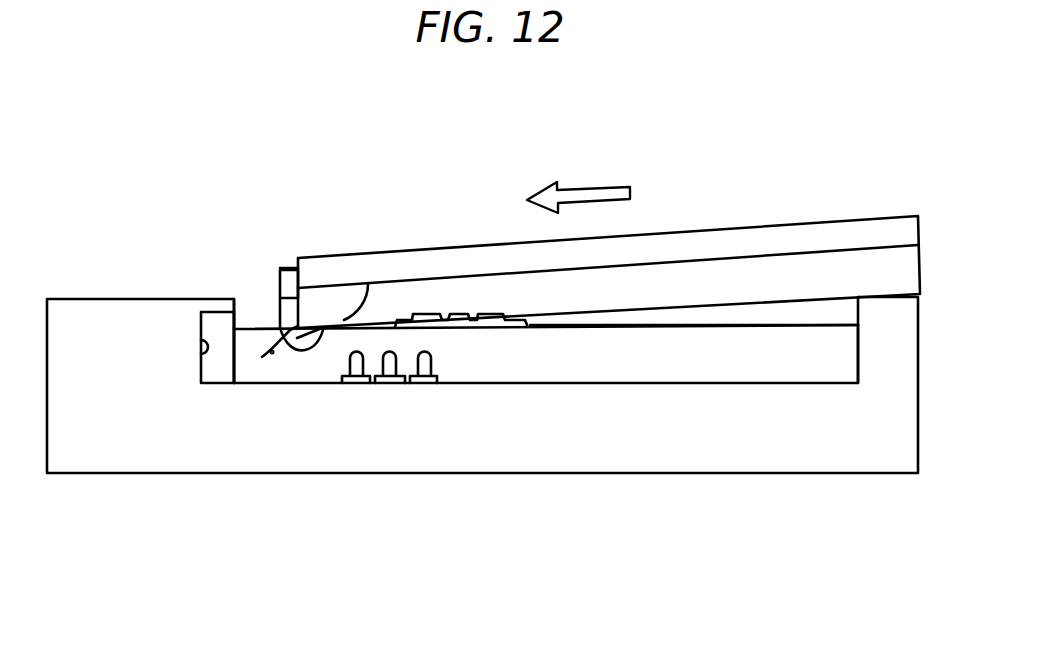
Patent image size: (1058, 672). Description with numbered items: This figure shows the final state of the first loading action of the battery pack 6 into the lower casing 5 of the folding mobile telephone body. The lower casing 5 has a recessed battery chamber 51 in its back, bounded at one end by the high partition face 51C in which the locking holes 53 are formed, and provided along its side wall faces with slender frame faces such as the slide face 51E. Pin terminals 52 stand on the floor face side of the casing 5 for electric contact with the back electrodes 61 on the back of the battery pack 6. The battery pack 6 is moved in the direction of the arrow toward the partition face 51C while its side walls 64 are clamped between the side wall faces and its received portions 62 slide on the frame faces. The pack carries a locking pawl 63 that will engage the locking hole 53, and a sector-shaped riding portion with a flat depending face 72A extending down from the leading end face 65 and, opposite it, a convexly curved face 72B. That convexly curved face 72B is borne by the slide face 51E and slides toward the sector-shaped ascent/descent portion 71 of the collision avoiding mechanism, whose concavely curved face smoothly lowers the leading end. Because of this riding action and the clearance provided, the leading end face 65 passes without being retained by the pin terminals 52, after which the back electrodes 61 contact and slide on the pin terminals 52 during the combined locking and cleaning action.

The lower casing 5 is at (737, 445).
The battery chamber 51 is at (662, 378).
The partition face 51C is at (244, 315).
The frame face 51E is at (700, 226).
The pin terminals 52 is at (409, 376).
The locking holes 53 is at (203, 352).
The battery pack 6 is at (609, 214).
The back electrodes 61 is at (490, 318).
The received portions 62 is at (671, 266).
The locking pawls 63 is at (286, 280).
The side walls 64 is at (378, 282).
The leading end face 65 is at (283, 268).
The ascent/descent portion 71 is at (262, 356).
The depending face 72A is at (288, 312).
The convexly curved face 72B is at (295, 347).